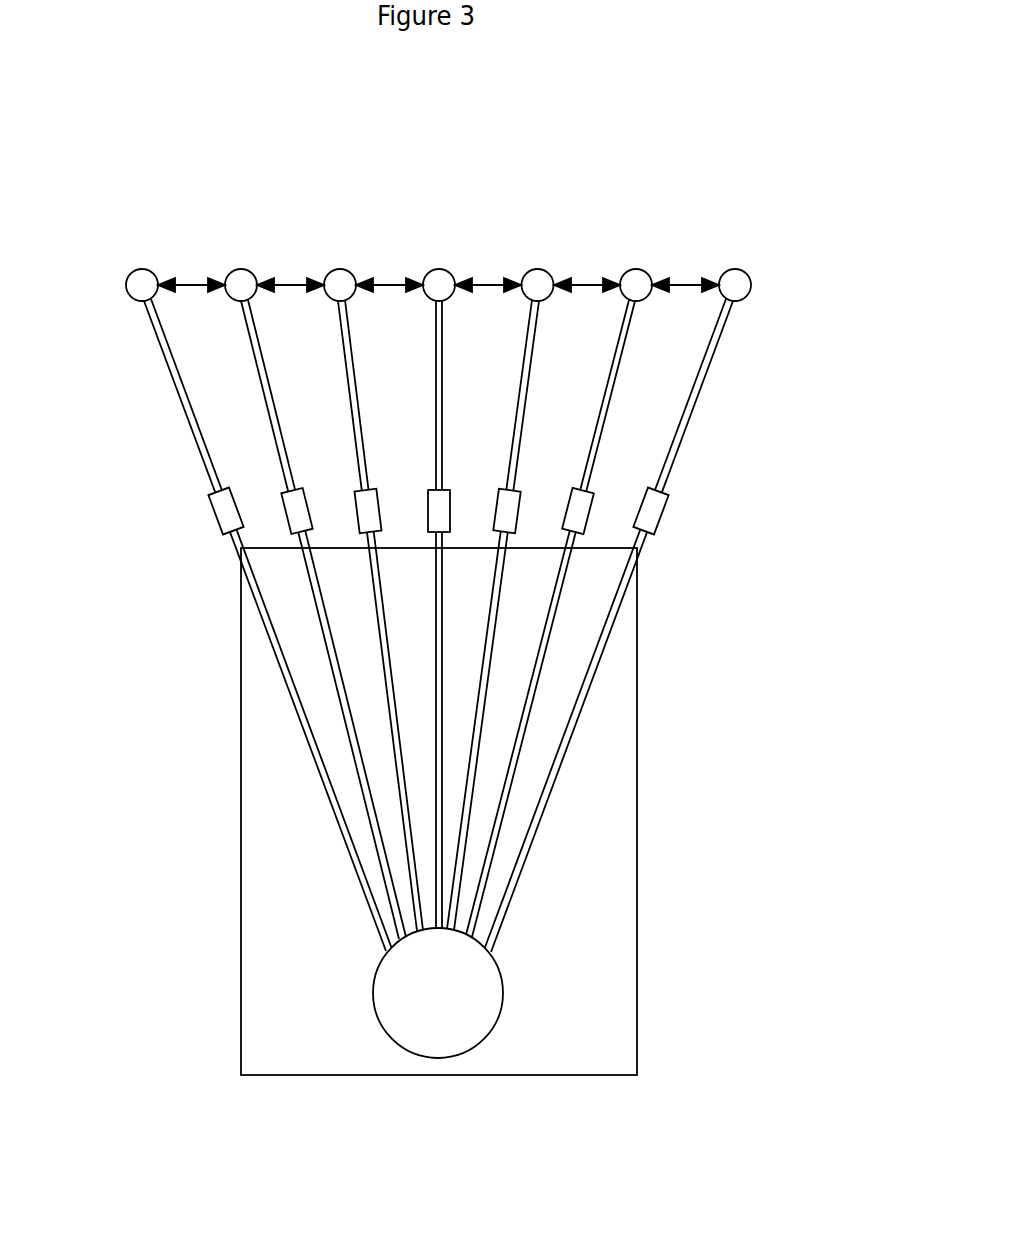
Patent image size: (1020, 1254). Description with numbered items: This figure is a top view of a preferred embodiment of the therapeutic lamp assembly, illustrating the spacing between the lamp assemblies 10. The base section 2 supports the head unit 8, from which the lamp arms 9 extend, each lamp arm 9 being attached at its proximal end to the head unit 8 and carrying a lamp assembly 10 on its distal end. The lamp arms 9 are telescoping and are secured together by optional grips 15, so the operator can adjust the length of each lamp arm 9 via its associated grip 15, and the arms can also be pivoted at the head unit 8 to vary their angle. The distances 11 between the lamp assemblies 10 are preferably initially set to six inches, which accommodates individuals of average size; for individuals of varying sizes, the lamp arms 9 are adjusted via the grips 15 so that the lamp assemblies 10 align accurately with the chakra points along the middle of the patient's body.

The base section 2 is at (241, 902).
The head unit 8 is at (504, 1000).
The lamp arms 9 is at (324, 763).
The lamp assemblies 10 is at (142, 285).
The distances between the lamp assemblies 11 is at (686, 285).
The grips 15 is at (226, 513).